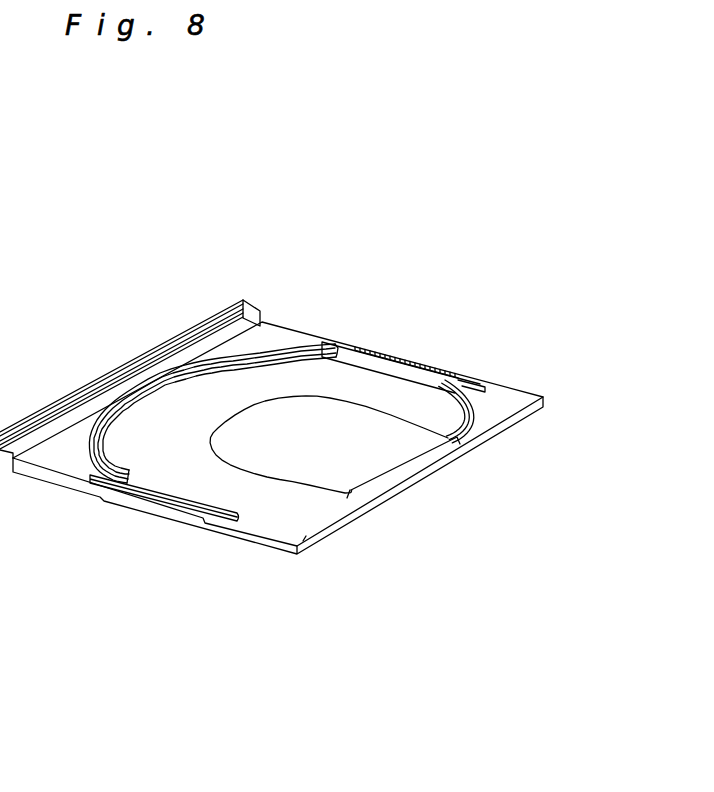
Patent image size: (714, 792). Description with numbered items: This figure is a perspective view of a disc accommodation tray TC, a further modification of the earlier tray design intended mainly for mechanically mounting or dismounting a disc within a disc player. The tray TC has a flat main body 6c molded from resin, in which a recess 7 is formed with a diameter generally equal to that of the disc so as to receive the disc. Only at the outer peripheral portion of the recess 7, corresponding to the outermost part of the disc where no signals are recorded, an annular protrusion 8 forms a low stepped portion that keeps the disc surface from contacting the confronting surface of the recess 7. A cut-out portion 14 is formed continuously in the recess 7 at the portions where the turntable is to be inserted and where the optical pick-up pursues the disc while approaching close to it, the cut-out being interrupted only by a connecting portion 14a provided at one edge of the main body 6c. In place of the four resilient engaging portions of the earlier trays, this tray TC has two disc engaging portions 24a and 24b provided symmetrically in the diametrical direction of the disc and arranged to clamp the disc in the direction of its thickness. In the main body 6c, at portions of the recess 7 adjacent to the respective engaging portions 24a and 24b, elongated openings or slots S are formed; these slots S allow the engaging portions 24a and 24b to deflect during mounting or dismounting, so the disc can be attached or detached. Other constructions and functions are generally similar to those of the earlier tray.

The disc accommodation tray TC is at (458, 311).
The main body 6c is at (507, 398).
The recess 7 is at (343, 382).
The annular protrusion 8 is at (320, 347).
The disc engaging portion 24a is at (182, 512).
The disc engaging portion 24b is at (413, 353).
The slot S is at (470, 372).
The cut-out portion 14 is at (390, 458).
The connecting portion 14a is at (383, 490).